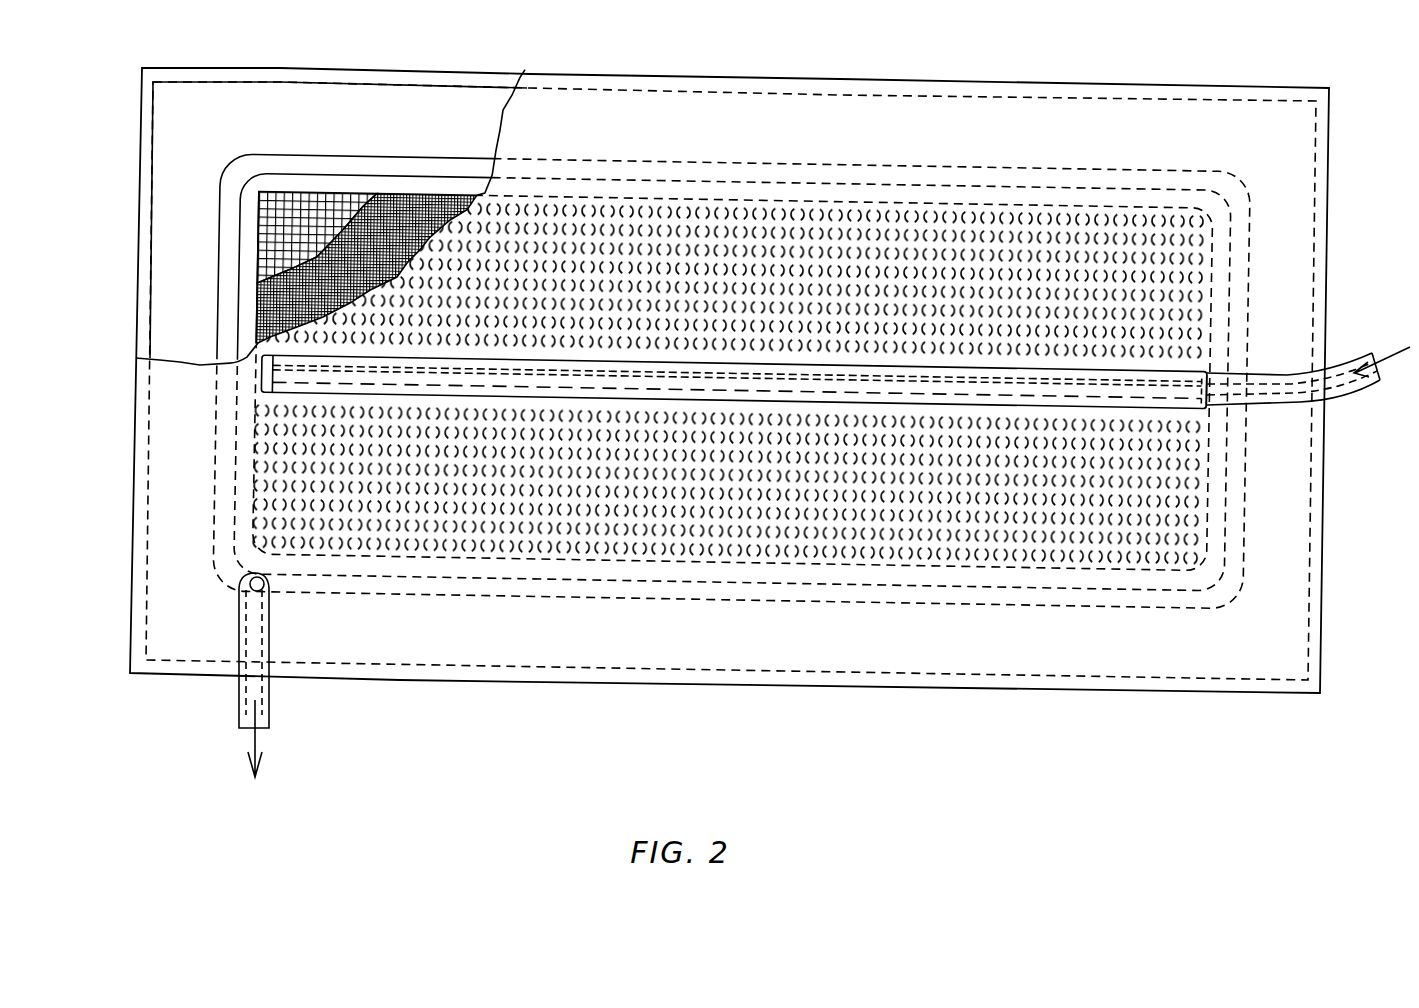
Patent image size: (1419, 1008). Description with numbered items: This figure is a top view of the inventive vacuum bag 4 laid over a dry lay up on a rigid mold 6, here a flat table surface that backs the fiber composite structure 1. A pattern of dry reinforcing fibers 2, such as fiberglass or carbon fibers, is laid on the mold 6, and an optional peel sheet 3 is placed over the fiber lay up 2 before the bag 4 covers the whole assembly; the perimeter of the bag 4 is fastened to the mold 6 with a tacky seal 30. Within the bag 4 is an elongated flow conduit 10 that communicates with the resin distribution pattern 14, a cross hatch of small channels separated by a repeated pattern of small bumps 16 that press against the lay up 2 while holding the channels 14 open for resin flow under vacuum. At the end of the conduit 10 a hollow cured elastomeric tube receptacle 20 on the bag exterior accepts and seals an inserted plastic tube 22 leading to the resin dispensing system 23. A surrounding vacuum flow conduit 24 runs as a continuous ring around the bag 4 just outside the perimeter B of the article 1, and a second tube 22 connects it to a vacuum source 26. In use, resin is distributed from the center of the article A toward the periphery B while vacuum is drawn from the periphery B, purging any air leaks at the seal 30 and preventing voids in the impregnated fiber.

The fiber composite structure 1 is at (247, 287).
The dry reinforcing fibers 2 is at (287, 207).
The peel sheet 3 is at (403, 217).
The vacuum bag 4 is at (566, 110).
The rigid mold 6 is at (186, 131).
The elongated flow conduits 10 is at (418, 384).
The resin distribution pattern 14 is at (707, 296).
The bumps 16 is at (1197, 559).
The tube receptacles 20 is at (1187, 404).
The plastic tube 22 is at (1342, 355).
The resin dispensing system 23 is at (1382, 360).
The vacuum flow conduit 24 is at (234, 184).
The vacuum source 26 is at (260, 735).
The tacky seal 30 is at (998, 88).
The center of the article A is at (712, 345).
The periphery of the article B is at (287, 228).